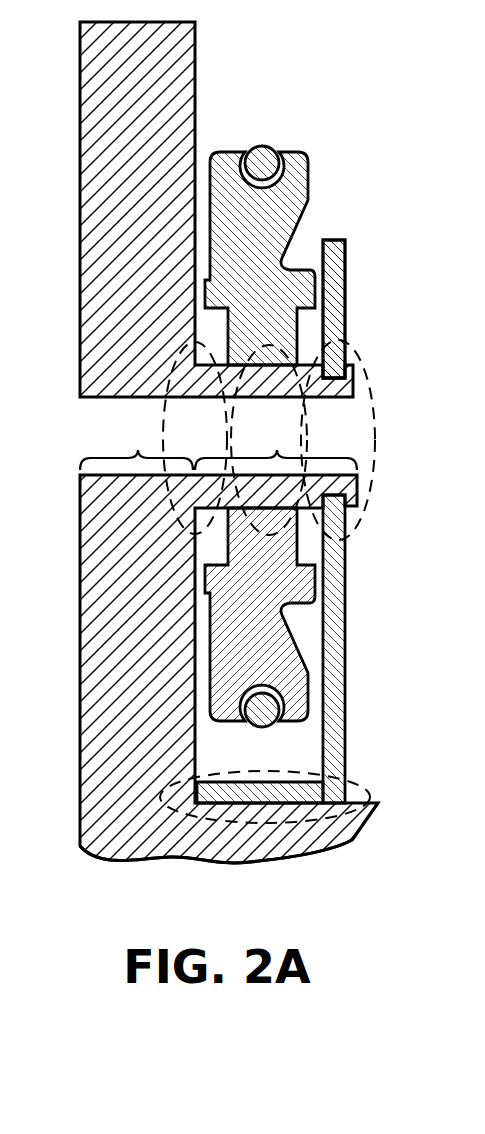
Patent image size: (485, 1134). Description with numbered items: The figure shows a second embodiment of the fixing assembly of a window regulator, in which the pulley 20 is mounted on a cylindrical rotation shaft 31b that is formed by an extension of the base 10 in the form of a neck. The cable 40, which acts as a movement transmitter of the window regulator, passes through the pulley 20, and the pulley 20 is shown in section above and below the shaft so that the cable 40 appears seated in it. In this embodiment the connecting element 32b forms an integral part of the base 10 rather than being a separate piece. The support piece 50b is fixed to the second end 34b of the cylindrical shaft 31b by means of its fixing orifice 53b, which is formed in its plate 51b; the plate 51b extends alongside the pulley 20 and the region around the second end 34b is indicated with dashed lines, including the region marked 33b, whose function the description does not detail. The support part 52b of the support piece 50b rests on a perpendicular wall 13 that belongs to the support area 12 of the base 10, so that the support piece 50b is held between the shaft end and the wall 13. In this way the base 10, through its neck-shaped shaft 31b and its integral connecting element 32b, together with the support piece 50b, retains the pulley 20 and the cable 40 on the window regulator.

The base 10 is at (158, 52).
The support area 12 is at (218, 770).
The perpendicular wall 13 is at (223, 837).
The pulley 20 is at (272, 222).
The cable 40 is at (262, 163).
The cylindrical rotation shaft 31b is at (276, 446).
The connecting element 32b is at (138, 450).
The gap region 33b is at (160, 417).
The second end 34b is at (373, 482).
The support piece 50b is at (352, 282).
The plate 51b is at (333, 323).
The support part 52b is at (207, 793).
The fixing orifice 53b is at (332, 422).